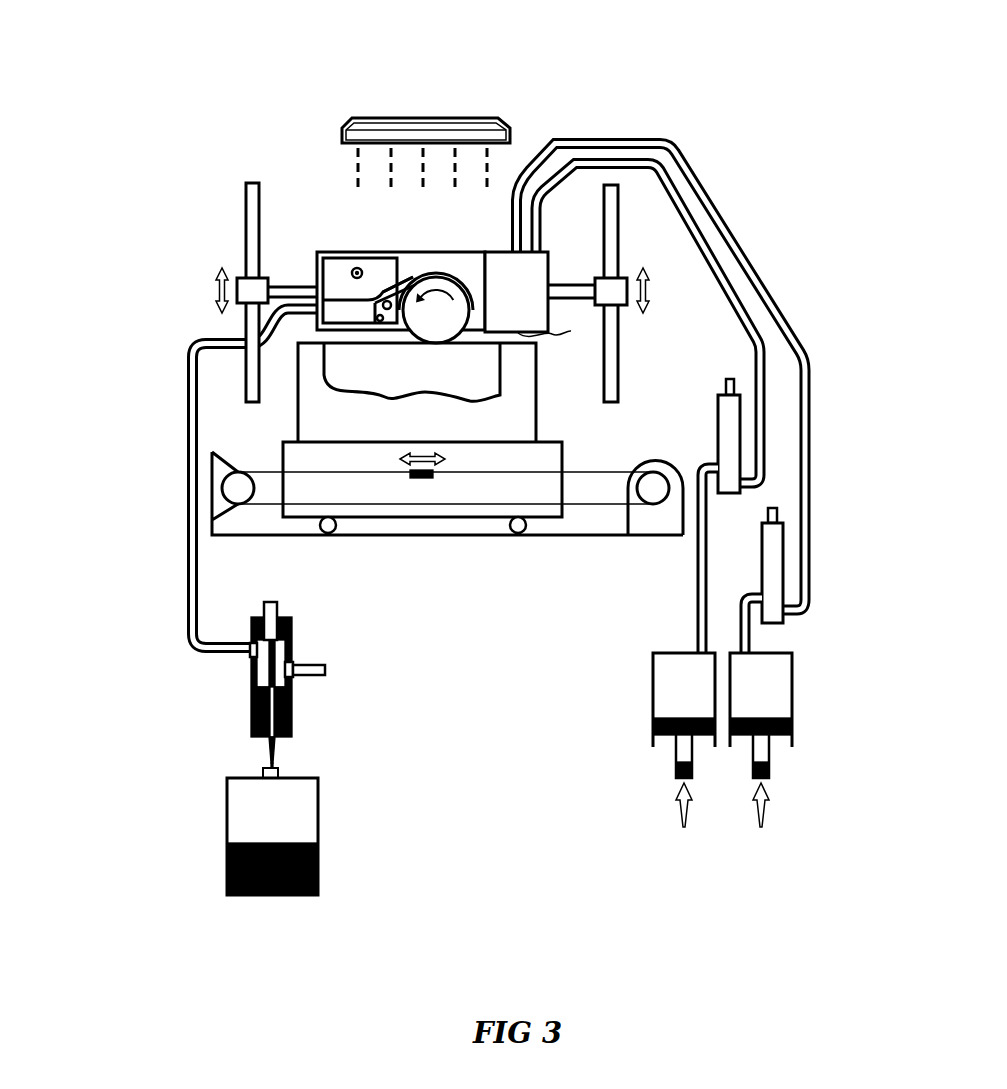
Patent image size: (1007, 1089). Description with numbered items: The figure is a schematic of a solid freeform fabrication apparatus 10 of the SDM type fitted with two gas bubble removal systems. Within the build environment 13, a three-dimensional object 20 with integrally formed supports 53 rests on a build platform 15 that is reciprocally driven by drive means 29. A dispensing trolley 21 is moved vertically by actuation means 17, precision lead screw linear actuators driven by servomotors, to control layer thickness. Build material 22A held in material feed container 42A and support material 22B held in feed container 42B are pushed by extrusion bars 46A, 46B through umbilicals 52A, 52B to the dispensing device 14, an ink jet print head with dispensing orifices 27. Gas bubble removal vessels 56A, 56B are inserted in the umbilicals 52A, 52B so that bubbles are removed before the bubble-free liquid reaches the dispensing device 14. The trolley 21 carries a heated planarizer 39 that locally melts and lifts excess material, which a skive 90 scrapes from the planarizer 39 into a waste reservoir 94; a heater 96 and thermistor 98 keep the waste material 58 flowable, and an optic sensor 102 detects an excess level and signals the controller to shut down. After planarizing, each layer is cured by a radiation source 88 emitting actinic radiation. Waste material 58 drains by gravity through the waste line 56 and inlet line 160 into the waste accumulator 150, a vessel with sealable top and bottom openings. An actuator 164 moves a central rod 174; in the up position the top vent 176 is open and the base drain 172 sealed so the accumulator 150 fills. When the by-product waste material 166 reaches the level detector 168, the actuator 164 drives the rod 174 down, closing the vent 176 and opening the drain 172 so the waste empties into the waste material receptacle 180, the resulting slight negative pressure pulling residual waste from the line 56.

The solid freeform fabrication apparatus 10 is at (242, 137).
The build environment 13 is at (426, 290).
The dispensing device 14 is at (516, 292).
The build platform 15 is at (422, 487).
The actuation means 17 is at (243, 240).
The three-dimensional object 20 is at (412, 372).
The dispensing trolley 21 is at (493, 252).
The build material 22A is at (660, 647).
The support material 22B is at (784, 712).
The dispensing orifices 27 is at (571, 333).
The drive means 29 is at (655, 498).
The heated planarizer 39 is at (436, 308).
The material feed container 42A is at (653, 700).
The feed container 42B is at (793, 702).
The extrusion bar 46A is at (676, 762).
The extrusion bar 46B is at (770, 762).
The umbilical 52A is at (690, 233).
The umbilical 52B is at (720, 232).
The supports 53 is at (417, 392).
The waste line 56 is at (190, 598).
The gas bubble removal vessel 56A is at (717, 440).
The gas bubble removal vessel 56B is at (762, 573).
The waste material 58 is at (335, 307).
The radiation source 88 is at (468, 137).
The skive 90 is at (410, 282).
The waste reservoir 94 is at (332, 276).
The heater 96 is at (395, 286).
The thermistor 98 is at (386, 300).
The optic sensor 102 is at (357, 268).
The waste accumulator 150 is at (319, 729).
The inlet line 160 is at (250, 643).
The actuator 164 is at (271, 603).
The by-product waste material 166 is at (282, 707).
The level detector 168 is at (294, 668).
The base drain 172 is at (280, 740).
The central rod 174 is at (292, 683).
The top vent 176 is at (277, 642).
The waste material receptacle 180 is at (318, 818).